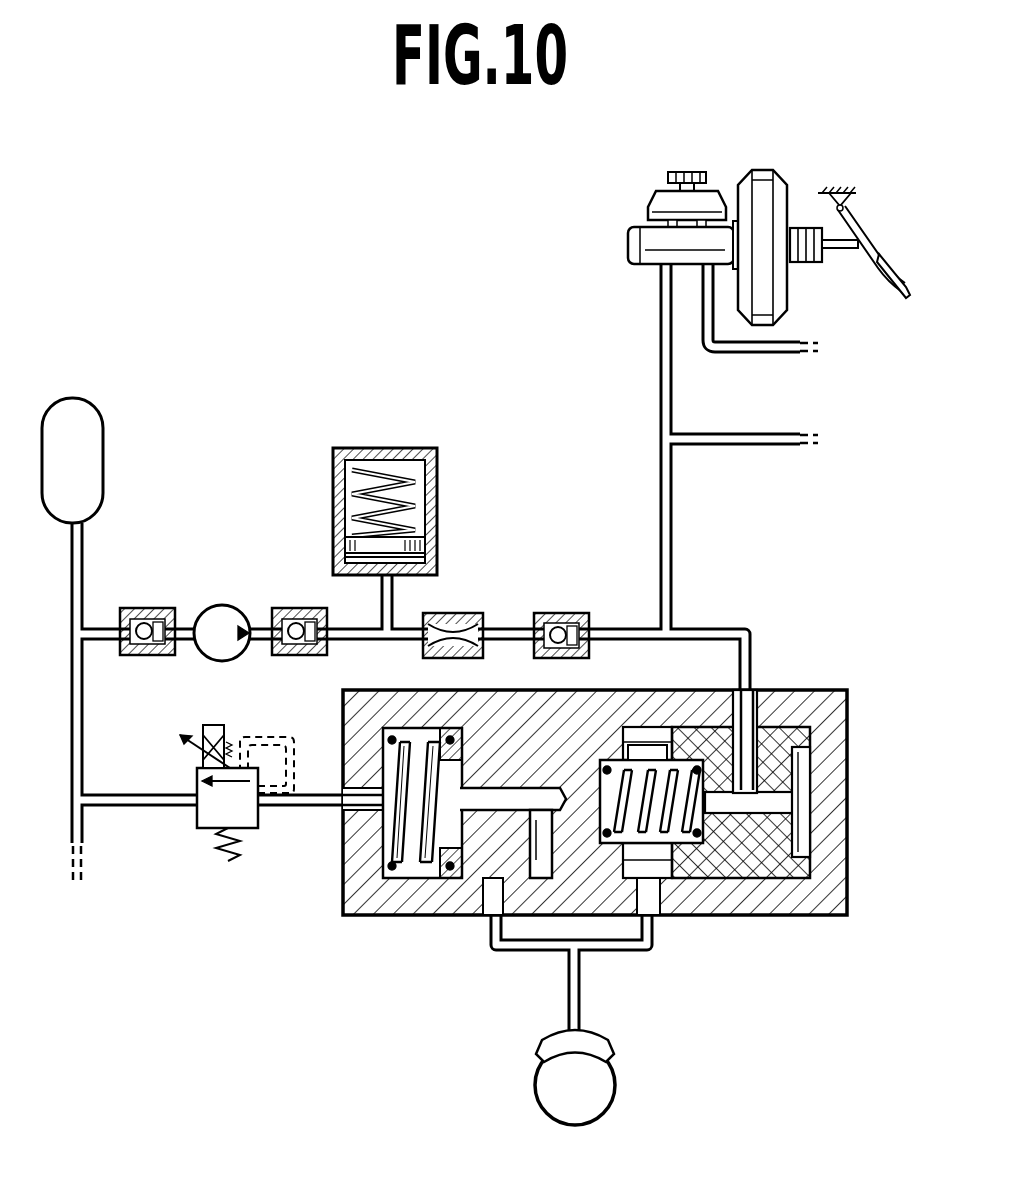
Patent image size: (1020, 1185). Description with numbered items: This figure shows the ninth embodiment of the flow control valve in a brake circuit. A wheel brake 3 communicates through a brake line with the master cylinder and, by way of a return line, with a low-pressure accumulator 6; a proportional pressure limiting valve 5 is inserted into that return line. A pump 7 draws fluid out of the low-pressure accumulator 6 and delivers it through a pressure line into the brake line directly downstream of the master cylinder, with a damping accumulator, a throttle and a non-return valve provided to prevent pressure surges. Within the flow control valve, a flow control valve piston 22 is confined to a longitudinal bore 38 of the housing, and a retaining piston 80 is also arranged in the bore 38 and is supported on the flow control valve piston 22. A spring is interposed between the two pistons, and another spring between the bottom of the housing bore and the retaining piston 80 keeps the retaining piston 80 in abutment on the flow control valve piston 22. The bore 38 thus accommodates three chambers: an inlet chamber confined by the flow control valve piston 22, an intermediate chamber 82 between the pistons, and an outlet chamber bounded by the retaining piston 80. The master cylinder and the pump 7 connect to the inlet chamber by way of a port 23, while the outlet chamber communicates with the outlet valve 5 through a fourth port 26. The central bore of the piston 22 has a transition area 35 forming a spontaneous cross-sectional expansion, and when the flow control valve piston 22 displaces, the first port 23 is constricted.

The wheel brake 3 is at (600, 1080).
The proportional pressure limiting valve 5 is at (238, 830).
The low-pressure accumulator 6 is at (84, 430).
The pump 7 is at (216, 620).
The flow control valve piston 22 is at (770, 880).
The port 23 is at (752, 705).
The fourth port 26 is at (343, 792).
The transition area 35 is at (716, 850).
The longitudinal bore 38 is at (402, 862).
The retaining piston 80 is at (507, 758).
The intermediate chamber 82 is at (632, 775).